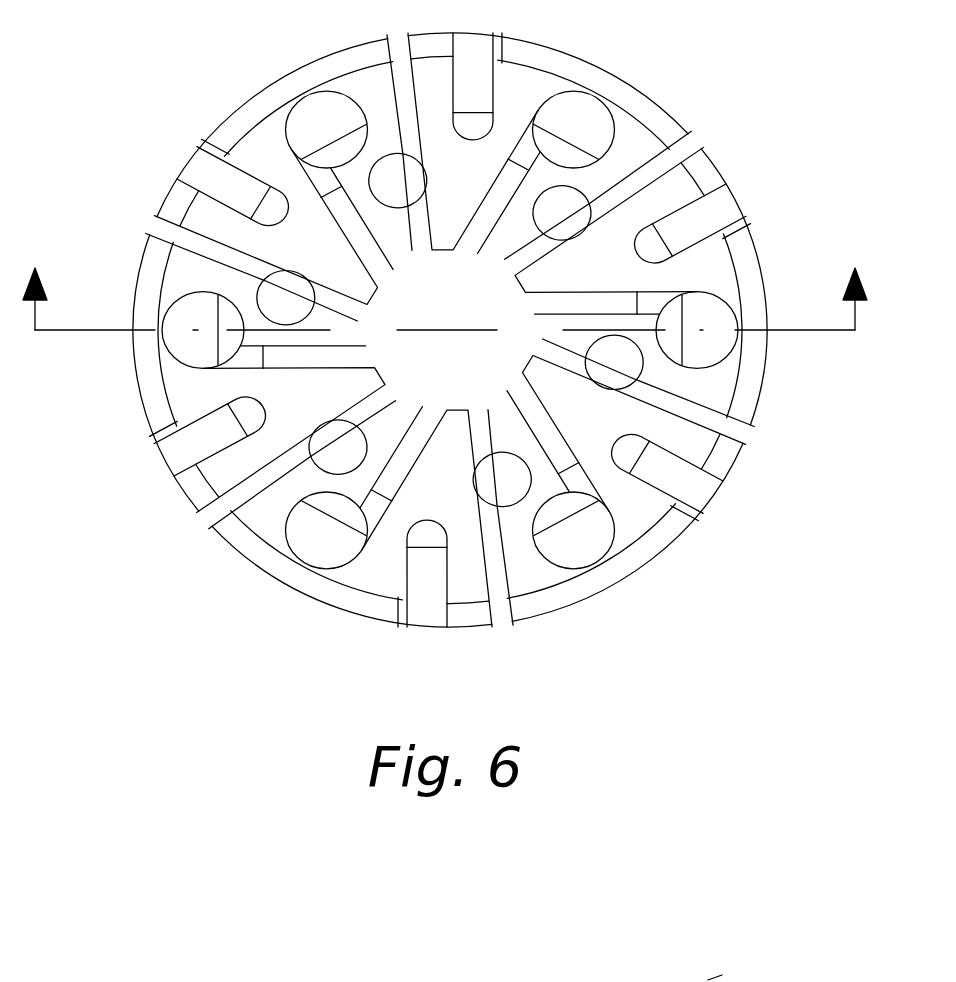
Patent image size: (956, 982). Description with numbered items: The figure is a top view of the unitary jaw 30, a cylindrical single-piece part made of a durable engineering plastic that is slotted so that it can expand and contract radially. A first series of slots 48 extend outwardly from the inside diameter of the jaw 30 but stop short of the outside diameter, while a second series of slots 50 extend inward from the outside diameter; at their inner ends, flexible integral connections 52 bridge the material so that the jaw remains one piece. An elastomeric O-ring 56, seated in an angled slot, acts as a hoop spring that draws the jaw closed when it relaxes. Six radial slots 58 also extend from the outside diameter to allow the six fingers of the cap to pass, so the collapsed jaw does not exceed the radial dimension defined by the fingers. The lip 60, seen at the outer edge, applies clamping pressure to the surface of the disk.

The jaw 30 is at (452, 491).
The first series of slots 48 is at (321, 108).
The second series of slots 50 is at (700, 140).
The flexible integral connections 52 is at (527, 268).
The O-ring 56 is at (320, 555).
The radial slots 58 is at (705, 500).
The lip 60 is at (150, 402).